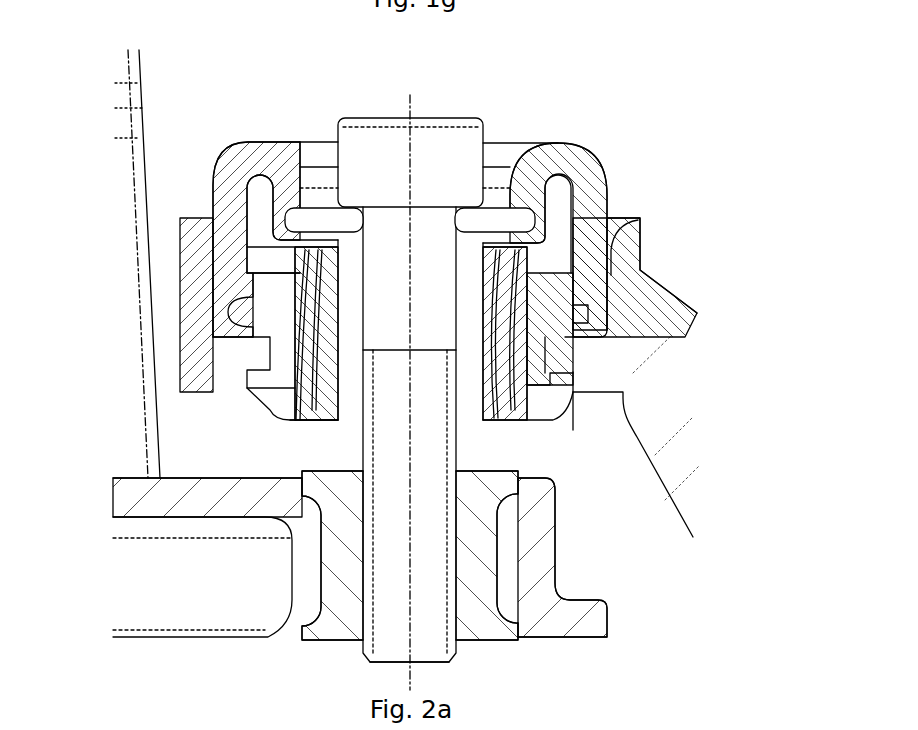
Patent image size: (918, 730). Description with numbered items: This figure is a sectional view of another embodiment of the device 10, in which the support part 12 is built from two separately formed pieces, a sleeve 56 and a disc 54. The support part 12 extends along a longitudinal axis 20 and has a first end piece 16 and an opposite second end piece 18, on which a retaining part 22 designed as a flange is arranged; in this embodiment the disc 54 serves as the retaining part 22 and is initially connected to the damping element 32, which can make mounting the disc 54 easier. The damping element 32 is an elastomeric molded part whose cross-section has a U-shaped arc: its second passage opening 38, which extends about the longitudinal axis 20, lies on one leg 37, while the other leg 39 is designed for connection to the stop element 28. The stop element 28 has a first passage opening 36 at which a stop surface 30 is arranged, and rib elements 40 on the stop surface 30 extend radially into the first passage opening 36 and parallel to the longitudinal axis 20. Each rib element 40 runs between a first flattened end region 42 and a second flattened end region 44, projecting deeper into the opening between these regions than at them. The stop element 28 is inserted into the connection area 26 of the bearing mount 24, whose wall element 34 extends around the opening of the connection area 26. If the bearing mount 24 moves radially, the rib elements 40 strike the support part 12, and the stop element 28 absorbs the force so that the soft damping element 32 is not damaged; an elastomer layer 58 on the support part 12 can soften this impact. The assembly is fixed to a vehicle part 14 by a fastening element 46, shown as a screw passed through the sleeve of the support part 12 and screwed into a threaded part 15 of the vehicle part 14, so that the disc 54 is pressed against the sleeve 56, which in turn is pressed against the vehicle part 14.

The device 10 is at (580, 96).
The support part 12 is at (548, 330).
The vehicle part 14 is at (187, 540).
The threaded part 15 is at (472, 610).
The first end piece 16 is at (463, 436).
The second end piece 18 is at (355, 264).
The longitudinal axis 20 is at (411, 115).
The retaining part 22 is at (320, 203).
The bearing mount 24 is at (573, 381).
The connection area 26 is at (563, 360).
The stop element 28 is at (477, 303).
The stop surface 30 is at (264, 328).
The damping element 32 is at (573, 168).
The wall element 34 is at (200, 306).
The first passage opening 36 is at (294, 421).
The leg 37 is at (493, 219).
The second passage opening 38 is at (297, 220).
The leg 39 is at (463, 329).
The rib element 40 is at (300, 327).
The first flattened end region 42 is at (350, 270).
The second flattened end region 44 is at (293, 377).
The fastening element 46 is at (393, 580).
The disc 54 is at (540, 220).
The sleeve 56 is at (476, 352).
The elastomer layer 58 is at (610, 273).